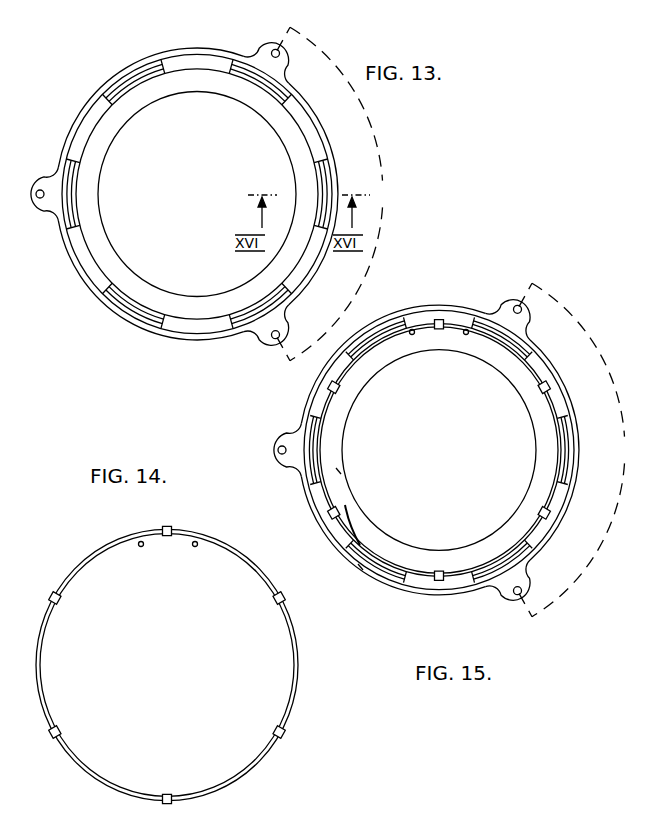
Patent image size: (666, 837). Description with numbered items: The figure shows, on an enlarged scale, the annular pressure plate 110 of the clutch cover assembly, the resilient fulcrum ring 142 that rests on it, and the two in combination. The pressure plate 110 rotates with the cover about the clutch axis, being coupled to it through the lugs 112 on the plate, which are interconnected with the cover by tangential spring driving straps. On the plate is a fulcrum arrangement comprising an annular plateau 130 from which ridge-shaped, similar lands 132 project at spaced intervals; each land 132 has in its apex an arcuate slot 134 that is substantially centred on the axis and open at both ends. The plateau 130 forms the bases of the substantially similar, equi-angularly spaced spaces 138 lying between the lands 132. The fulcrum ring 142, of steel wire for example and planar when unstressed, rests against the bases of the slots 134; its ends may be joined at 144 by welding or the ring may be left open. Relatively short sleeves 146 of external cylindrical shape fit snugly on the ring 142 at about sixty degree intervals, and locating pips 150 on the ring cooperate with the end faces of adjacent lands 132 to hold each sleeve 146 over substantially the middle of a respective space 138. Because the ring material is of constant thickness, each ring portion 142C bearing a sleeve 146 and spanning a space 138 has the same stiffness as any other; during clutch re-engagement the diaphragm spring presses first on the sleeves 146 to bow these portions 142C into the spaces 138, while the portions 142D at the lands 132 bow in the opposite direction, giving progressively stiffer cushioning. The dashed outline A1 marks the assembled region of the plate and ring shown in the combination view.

In FIG. 13, the pressure plate 110 is at (185, 98).
In FIG. 13, the lugs 112 is at (36, 207).
In FIG. 13, the annular plateau 130 is at (212, 66).
In FIG. 15, the annular plateau 130 is at (332, 532).
In FIG. 13, the lands 132 is at (123, 98).
In FIG. 15, the lands 132 is at (360, 545).
In FIG. 13, the arcuate slot 134 is at (143, 72).
In FIG. 13, the spaces 138 is at (96, 108).
In FIG. 15, the spaces 138 is at (310, 495).
In FIG. 14, the fulcrum ring 142 is at (96, 553).
In FIG. 15, the fulcrum ring 142 is at (403, 588).
In FIG. 15, the ring portion 142C is at (338, 472).
In FIG. 15, the ring portions 142D is at (360, 567).
In FIG. 14, the attachment of ring ends 144 is at (210, 790).
In FIG. 14, the sleeves 146 is at (168, 527).
In FIG. 15, the sleeves 146 is at (443, 316).
In FIG. 14, the locating pips 150 is at (196, 547).
In FIG. 15, the locating pips 150 is at (463, 335).
In FIG. 13, the assembly A1 is at (382, 181).
In FIG. 15, the assembly A1 is at (624, 437).